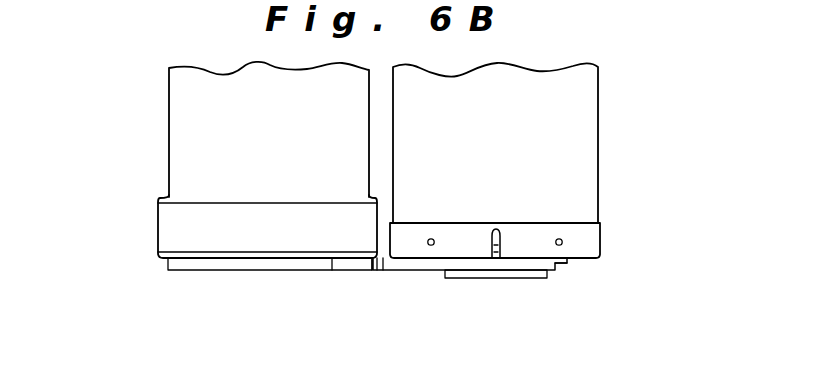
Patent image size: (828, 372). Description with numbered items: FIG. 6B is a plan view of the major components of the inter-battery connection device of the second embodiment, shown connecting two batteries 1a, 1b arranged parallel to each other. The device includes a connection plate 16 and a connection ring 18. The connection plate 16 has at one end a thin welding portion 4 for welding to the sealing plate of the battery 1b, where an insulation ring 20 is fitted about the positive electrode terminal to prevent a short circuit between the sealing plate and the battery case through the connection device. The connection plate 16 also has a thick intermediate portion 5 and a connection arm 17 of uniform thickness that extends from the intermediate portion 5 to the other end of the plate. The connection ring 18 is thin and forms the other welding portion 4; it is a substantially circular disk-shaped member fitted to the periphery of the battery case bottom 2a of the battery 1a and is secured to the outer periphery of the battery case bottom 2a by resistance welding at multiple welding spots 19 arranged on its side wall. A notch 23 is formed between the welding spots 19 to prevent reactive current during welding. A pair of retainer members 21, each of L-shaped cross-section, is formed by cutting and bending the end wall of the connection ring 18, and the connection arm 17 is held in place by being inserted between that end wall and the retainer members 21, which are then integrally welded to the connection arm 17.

The battery 1a is at (568, 130).
The battery 1b is at (192, 130).
The battery case bottom 2a is at (592, 215).
The welding portion 4 is at (252, 267).
The intermediate portion 5 is at (398, 272).
The connection plate 16 is at (380, 272).
The connection arm 17 is at (548, 268).
The connection ring 18 is at (592, 242).
The welding spots 19 is at (434, 240).
The insulation ring 20 is at (182, 231).
The retainer members 21 is at (470, 277).
The notch 23 is at (502, 240).